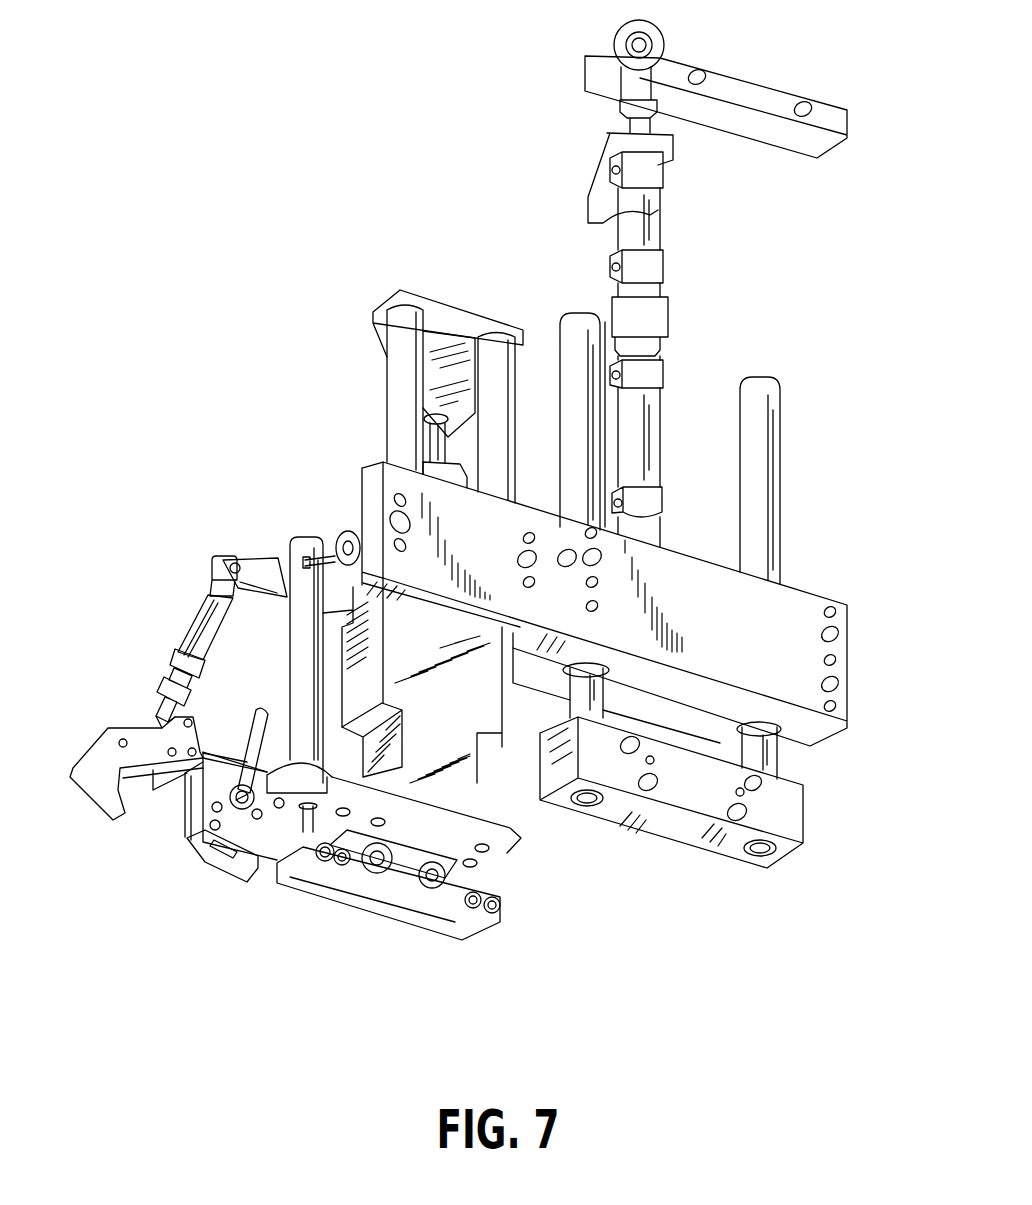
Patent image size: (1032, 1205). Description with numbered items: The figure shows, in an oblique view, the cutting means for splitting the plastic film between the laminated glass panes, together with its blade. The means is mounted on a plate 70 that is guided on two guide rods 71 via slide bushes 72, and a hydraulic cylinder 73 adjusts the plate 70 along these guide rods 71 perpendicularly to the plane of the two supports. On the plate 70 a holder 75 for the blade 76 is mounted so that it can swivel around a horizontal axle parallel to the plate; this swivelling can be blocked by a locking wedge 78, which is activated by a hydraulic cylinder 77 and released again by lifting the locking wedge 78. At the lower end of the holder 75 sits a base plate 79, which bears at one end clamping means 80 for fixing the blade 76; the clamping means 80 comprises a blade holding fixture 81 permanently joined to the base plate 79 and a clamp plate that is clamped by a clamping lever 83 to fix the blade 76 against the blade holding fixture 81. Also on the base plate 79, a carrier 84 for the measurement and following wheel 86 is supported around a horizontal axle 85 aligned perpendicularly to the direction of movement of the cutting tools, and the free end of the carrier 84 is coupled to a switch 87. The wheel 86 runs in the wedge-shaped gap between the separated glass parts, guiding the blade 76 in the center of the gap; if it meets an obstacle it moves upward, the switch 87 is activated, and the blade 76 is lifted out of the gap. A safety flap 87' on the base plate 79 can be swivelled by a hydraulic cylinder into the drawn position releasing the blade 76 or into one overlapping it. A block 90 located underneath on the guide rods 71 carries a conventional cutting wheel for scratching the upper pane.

The plate 70 is at (773, 617).
The guide rods 71 is at (570, 338).
The slide bushes 72 is at (617, 678).
The hydraulic cylinder 73 is at (627, 318).
The holder 75 is at (505, 806).
The blade 76 is at (215, 870).
The hydraulic cylinder 77 is at (450, 368).
The locking wedge 78 is at (466, 612).
The base plate 79 is at (510, 837).
The clamping means 80 is at (246, 830).
The blade holding fixture 81 is at (188, 813).
The clamping lever 83 is at (252, 733).
The carrier 84 is at (296, 885).
The axle 85 is at (433, 885).
The measurement and following wheel 86 is at (372, 878).
The switch 87 is at (197, 601).
The safety flap 87' is at (162, 746).
The block 90 is at (707, 827).